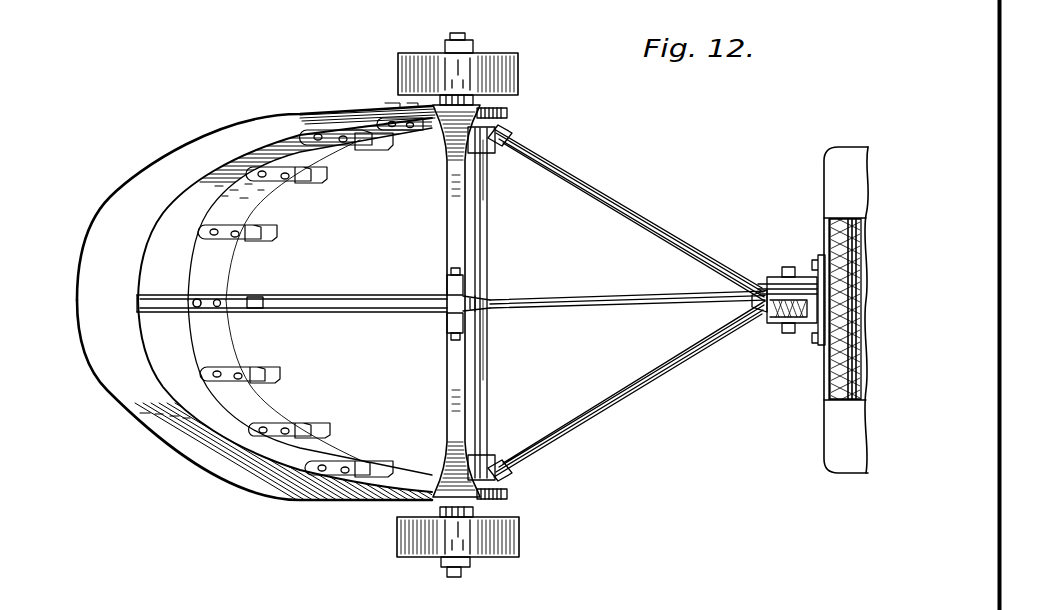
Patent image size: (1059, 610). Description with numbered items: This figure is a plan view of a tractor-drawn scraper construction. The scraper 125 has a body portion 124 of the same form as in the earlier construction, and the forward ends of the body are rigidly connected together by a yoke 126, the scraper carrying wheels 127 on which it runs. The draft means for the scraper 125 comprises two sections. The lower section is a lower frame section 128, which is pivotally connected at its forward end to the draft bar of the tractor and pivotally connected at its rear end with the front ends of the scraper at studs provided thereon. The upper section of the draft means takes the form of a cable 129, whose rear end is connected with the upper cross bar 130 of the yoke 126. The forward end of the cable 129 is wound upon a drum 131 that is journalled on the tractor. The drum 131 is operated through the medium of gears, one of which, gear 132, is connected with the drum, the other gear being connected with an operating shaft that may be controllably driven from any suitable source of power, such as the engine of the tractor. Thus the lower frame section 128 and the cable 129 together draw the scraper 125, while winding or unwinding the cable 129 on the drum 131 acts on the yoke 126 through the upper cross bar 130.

The body portion 124 is at (256, 128).
The scraper 125 is at (140, 167).
The yoke 126 is at (464, 261).
The wheels 127 is at (500, 77).
The lower frame section 128 is at (669, 233).
The cable 129 is at (594, 302).
The upper cross bar 130 is at (454, 243).
The drum 131 is at (798, 290).
The gear 132 is at (756, 325).